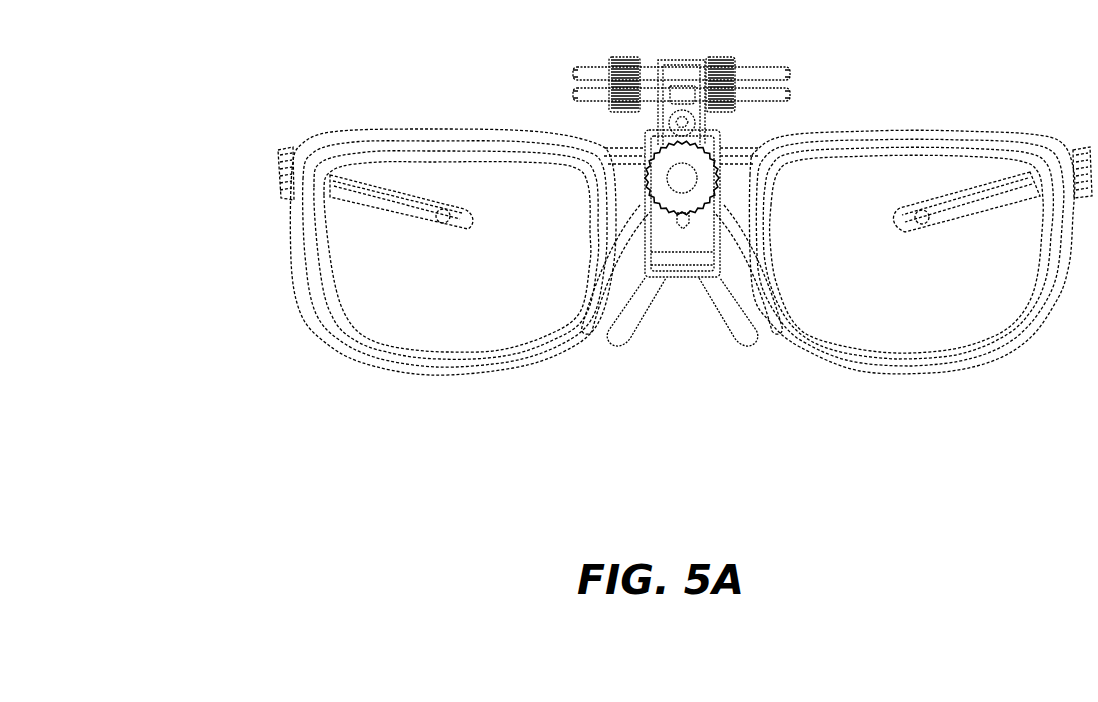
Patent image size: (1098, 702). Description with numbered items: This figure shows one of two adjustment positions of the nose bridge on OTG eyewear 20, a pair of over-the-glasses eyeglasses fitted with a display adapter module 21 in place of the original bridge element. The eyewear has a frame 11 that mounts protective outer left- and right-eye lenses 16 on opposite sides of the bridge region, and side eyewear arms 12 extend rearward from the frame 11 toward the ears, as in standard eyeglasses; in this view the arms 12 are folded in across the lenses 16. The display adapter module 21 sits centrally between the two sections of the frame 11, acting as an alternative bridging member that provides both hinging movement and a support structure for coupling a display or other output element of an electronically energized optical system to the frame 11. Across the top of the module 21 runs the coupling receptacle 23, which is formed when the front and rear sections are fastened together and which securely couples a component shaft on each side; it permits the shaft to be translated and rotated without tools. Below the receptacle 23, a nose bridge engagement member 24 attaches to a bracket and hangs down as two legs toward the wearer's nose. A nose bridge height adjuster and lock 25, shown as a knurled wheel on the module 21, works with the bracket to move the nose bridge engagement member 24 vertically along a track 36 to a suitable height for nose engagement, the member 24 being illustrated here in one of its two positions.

The frame 11 is at (397, 135).
The side eyewear arm 12 is at (417, 226).
The protective outer lens 16 is at (878, 292).
The OTG eyewear 20 is at (242, 437).
The display adapter module 21 is at (745, 377).
The coupling receptacle 23 is at (790, 88).
The nose bridge engagement member 24 is at (615, 342).
The nose bridge height adjuster and lock 25 is at (645, 155).
The track 36 is at (677, 220).